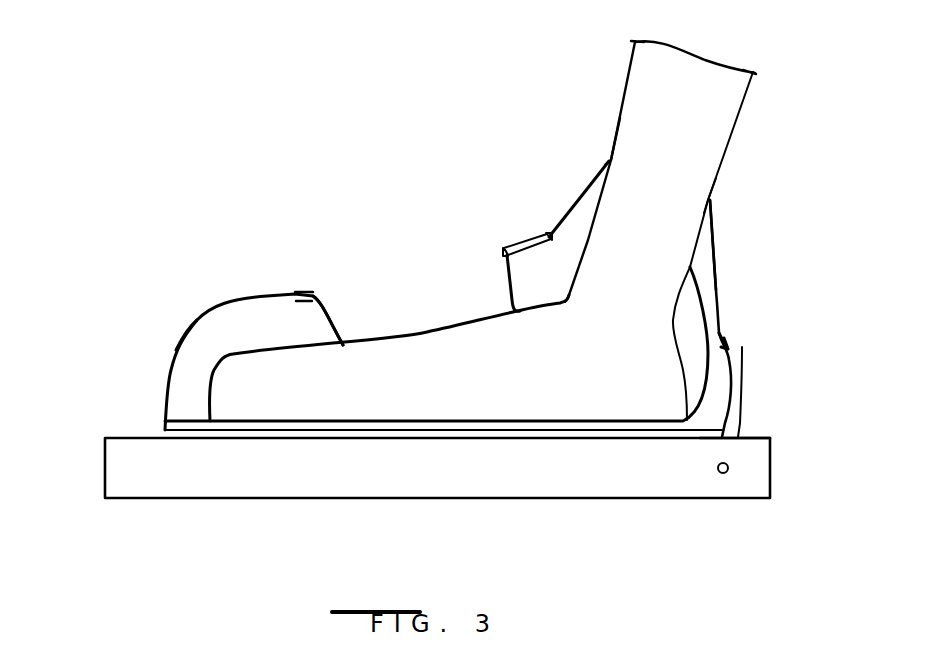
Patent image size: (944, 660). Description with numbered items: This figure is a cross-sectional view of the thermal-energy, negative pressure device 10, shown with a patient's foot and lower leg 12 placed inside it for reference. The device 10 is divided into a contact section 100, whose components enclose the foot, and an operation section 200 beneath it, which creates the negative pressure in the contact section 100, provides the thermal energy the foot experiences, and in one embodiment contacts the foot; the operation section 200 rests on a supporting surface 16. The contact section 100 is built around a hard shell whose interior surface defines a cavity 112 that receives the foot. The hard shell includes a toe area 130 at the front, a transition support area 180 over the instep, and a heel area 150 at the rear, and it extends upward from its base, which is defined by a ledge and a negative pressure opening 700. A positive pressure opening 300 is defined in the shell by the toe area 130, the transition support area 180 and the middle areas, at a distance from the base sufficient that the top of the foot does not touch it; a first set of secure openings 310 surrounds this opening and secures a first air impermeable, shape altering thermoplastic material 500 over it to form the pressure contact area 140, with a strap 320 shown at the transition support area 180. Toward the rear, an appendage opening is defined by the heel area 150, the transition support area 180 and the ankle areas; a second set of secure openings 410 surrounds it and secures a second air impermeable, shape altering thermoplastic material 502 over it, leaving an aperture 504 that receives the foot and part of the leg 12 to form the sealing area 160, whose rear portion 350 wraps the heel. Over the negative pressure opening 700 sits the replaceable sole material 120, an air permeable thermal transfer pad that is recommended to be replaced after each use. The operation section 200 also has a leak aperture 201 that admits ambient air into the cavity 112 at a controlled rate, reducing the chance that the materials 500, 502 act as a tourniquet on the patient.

The thermal-energy, negative pressure device 10 is at (826, 128).
The leg of wearer 12 is at (690, 145).
The ground surface 16 is at (760, 437).
The contact section 100 is at (115, 433).
The cavity 112 is at (200, 336).
The sole material 120 is at (152, 437).
The toe area 130 is at (228, 302).
The pressure contact area 140 is at (510, 275).
The heel area 150 is at (738, 435).
The sealing area 160 is at (583, 192).
The transition support area 180 is at (512, 247).
The operation section 200 is at (97, 498).
The leak aperture 201 is at (729, 467).
The positive pressure opening 300 is at (505, 250).
The first set of secure openings 310 is at (298, 292).
The ankle strap 320 is at (506, 250).
The heel cup 350 is at (718, 303).
The second set of secure openings 410 is at (720, 333).
The first air impermeable, shape altering thermoplastic material 500 is at (517, 290).
The second air impermeable, shape altering thermoplastic material 502 is at (713, 220).
The aperture 504 is at (603, 161).
The negative pressure opening 700 is at (192, 397).